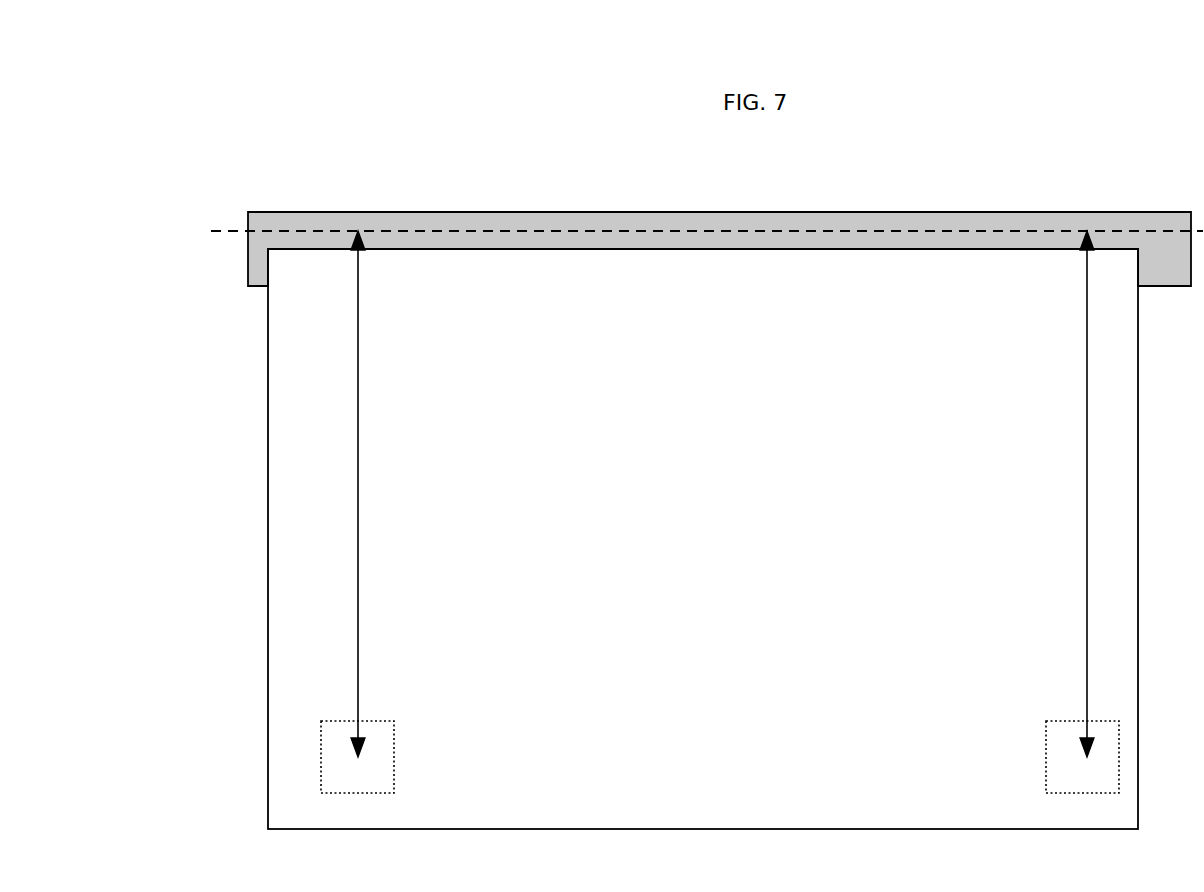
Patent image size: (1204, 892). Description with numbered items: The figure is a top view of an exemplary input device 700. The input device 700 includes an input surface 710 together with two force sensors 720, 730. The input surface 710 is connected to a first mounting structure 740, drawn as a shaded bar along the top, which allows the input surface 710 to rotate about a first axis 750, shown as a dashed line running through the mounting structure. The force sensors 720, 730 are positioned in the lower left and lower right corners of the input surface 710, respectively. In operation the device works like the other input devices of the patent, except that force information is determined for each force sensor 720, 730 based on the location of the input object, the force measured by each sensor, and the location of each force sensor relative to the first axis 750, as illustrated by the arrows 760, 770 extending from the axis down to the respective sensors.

The input device 700 is at (394, 60).
The input surface 710 is at (267, 503).
The force sensor 720 is at (395, 739).
The force sensor 730 is at (1046, 739).
The first mounting structure 740 is at (475, 211).
The first axis 750 is at (235, 231).
The arrow 760 is at (358, 476).
The arrow 770 is at (1087, 430).